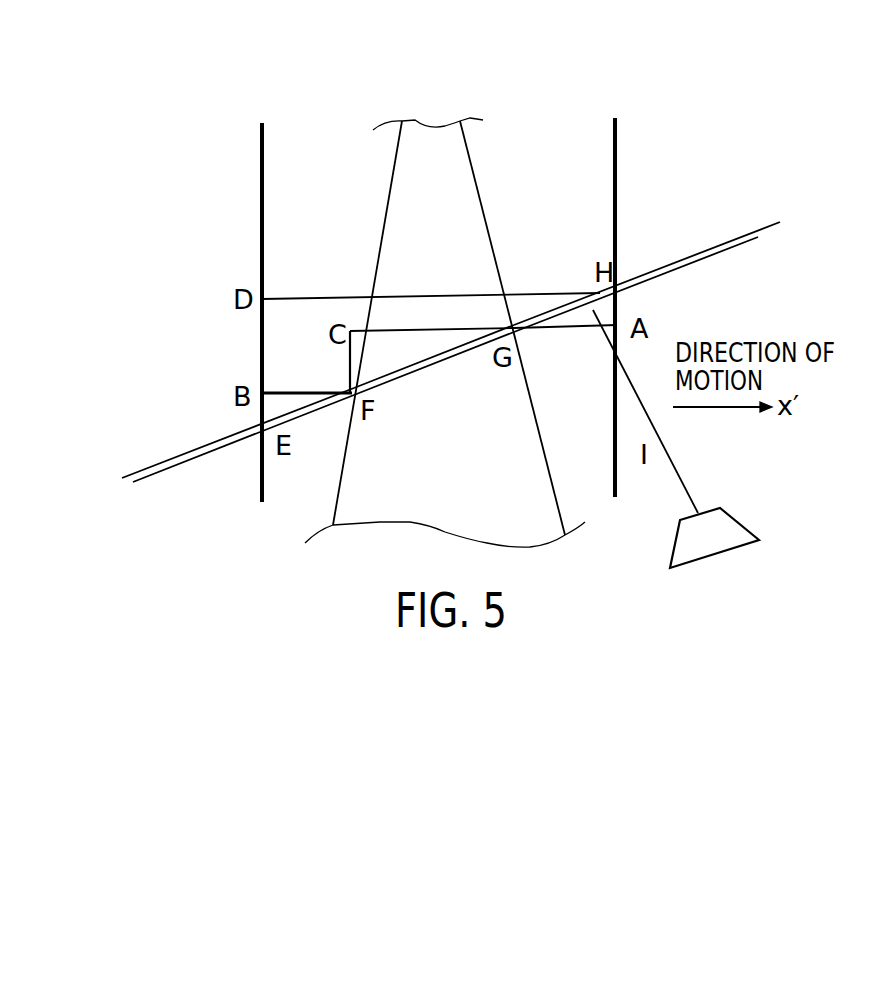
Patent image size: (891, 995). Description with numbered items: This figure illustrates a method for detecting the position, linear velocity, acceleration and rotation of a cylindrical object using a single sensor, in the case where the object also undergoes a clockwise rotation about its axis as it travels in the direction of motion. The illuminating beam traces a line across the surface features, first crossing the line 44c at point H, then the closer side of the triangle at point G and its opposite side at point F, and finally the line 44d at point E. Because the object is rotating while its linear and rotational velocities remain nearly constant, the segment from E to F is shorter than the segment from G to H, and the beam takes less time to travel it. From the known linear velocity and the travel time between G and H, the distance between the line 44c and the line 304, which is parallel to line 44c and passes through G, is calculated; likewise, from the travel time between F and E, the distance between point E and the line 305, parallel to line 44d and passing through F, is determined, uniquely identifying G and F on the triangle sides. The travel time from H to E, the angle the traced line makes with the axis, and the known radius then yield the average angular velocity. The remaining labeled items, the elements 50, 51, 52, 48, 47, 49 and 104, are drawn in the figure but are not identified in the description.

The line 44d is at (265, 143).
The line 44c is at (618, 138).
The line 305 is at (387, 208).
The line 304 is at (478, 190).
The scan line segment G-H 50 is at (546, 308).
The scan line segment F-G 51 is at (430, 366).
The scan line segment E-F 52 is at (317, 411).
The line segment C-G 48 is at (412, 330).
The line segment G-A 47 is at (555, 328).
The line segment B-F 49 is at (290, 392).
The focal spot 104 is at (737, 523).